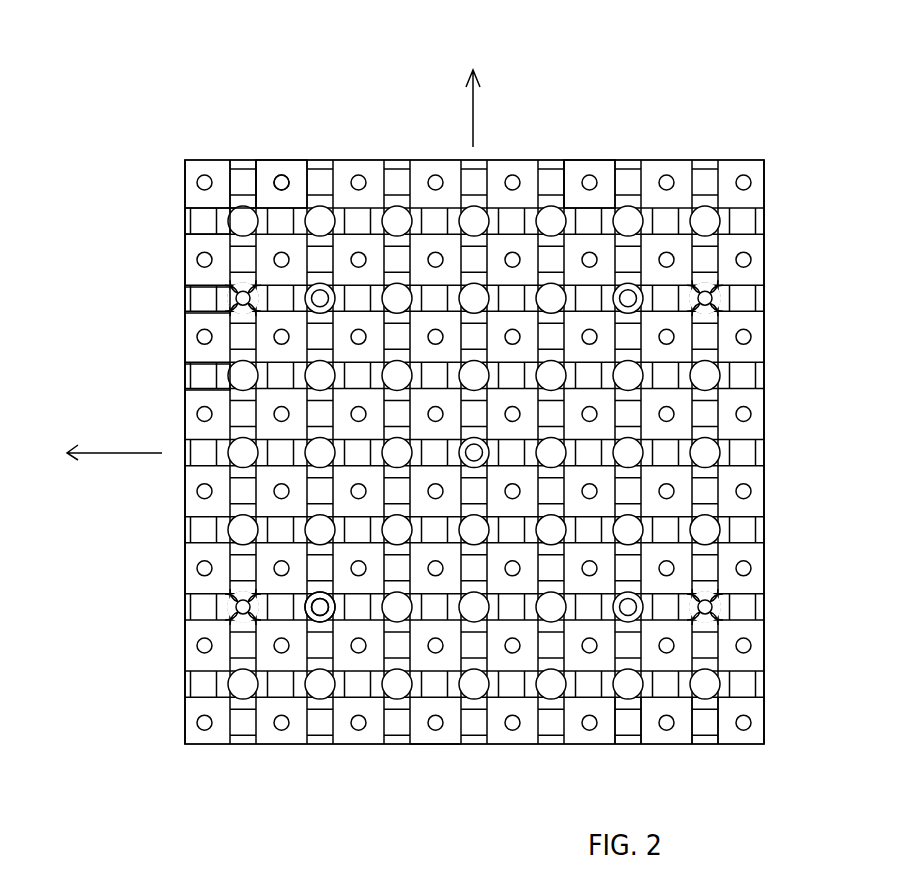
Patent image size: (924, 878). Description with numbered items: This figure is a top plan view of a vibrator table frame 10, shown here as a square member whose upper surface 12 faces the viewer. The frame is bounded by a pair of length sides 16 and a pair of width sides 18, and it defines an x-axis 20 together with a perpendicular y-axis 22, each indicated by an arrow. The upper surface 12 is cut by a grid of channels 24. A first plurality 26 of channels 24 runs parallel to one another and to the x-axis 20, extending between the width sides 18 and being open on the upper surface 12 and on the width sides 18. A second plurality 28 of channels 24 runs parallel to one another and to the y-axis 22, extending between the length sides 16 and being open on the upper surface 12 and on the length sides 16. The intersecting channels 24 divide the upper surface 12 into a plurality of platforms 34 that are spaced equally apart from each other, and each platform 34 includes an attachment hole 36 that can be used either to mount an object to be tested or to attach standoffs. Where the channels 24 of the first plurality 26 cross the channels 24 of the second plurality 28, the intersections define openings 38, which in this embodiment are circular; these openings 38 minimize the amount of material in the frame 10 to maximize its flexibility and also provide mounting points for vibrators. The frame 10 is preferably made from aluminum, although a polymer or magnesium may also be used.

The table frame 10 is at (516, 139).
The upper surface 12 is at (598, 190).
The length sides 16 is at (573, 163).
The width sides 18 is at (763, 410).
The x-axis 20 is at (112, 453).
The y-axis 22 is at (470, 105).
The channels 24 is at (208, 220).
The first plurality of channels 26 is at (202, 380).
The second plurality of channels 28 is at (625, 738).
The platforms 34 is at (298, 178).
The attachment holes 36 is at (280, 175).
The openings 38 is at (325, 612).